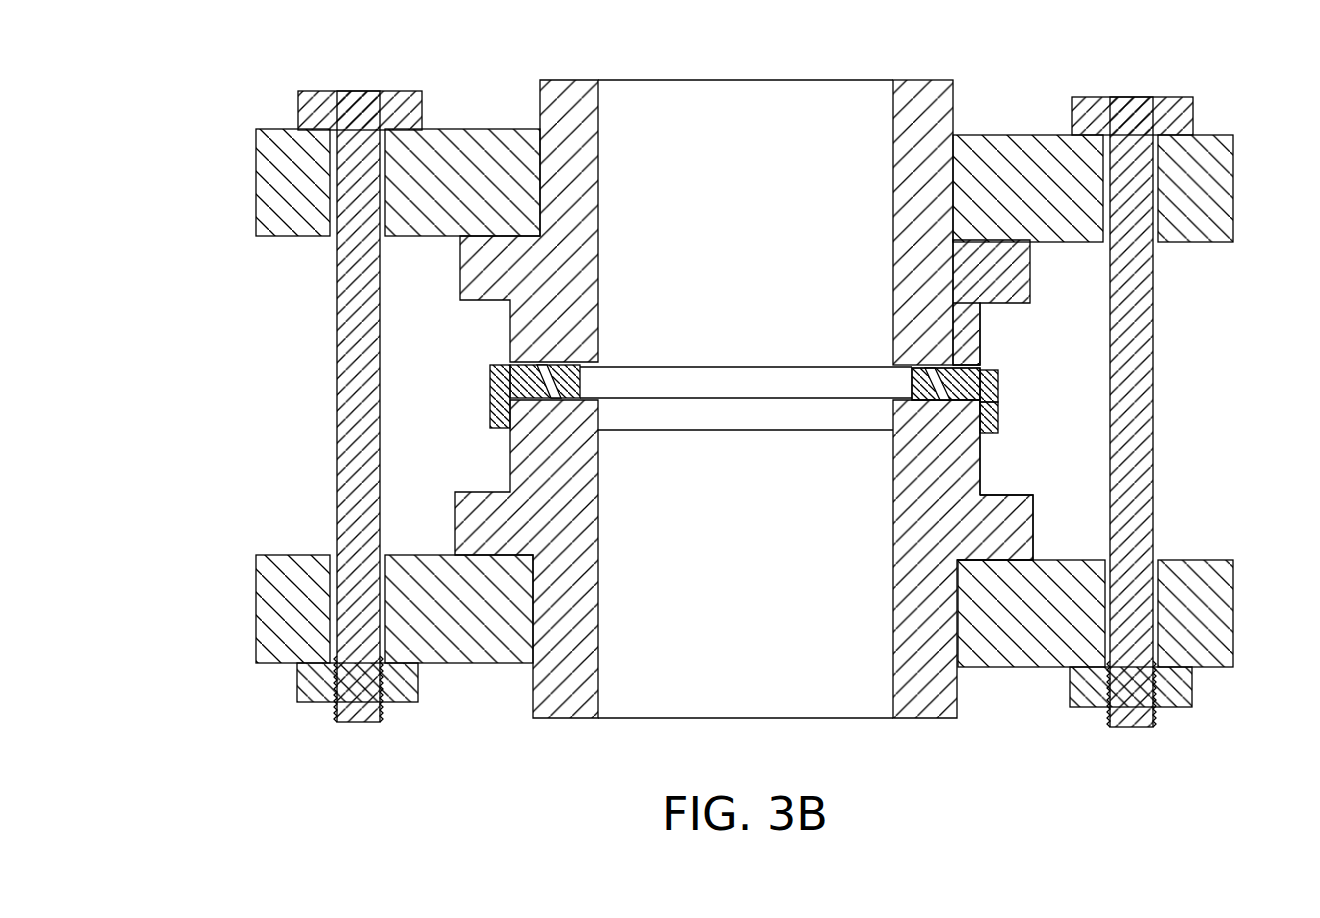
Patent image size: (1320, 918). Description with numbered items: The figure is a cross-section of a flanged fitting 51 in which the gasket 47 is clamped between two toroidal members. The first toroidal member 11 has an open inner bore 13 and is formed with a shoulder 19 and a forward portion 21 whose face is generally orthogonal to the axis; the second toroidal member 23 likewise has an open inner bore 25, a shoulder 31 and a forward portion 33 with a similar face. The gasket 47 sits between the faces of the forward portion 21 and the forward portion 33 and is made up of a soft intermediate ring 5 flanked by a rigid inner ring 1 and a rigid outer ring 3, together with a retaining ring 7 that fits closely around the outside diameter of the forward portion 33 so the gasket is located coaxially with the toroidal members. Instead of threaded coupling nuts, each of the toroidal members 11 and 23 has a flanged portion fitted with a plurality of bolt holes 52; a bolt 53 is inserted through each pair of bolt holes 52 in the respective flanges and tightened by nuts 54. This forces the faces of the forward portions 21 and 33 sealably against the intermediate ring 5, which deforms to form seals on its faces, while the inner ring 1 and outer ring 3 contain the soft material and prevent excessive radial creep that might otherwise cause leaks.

The inner ring 1 is at (910, 390).
The outer ring 3 is at (982, 390).
The intermediate ring 5 is at (1000, 375).
The retaining ring 7 is at (992, 412).
The first toroidal member 11 is at (970, 100).
The open inner bore 13 is at (781, 100).
The shoulder 19 is at (1008, 272).
The forward portion 21 is at (945, 318).
The second toroidal member 23 is at (968, 710).
The open inner bore 25 is at (773, 695).
The shoulder 31 is at (1010, 533).
The forward portion 33 is at (945, 470).
The gasket 47 is at (668, 338).
The flanged fitting 51 is at (225, 106).
The bolt holes 52 is at (1158, 207).
The bolt 53 is at (1155, 414).
The nuts 54 is at (1205, 708).